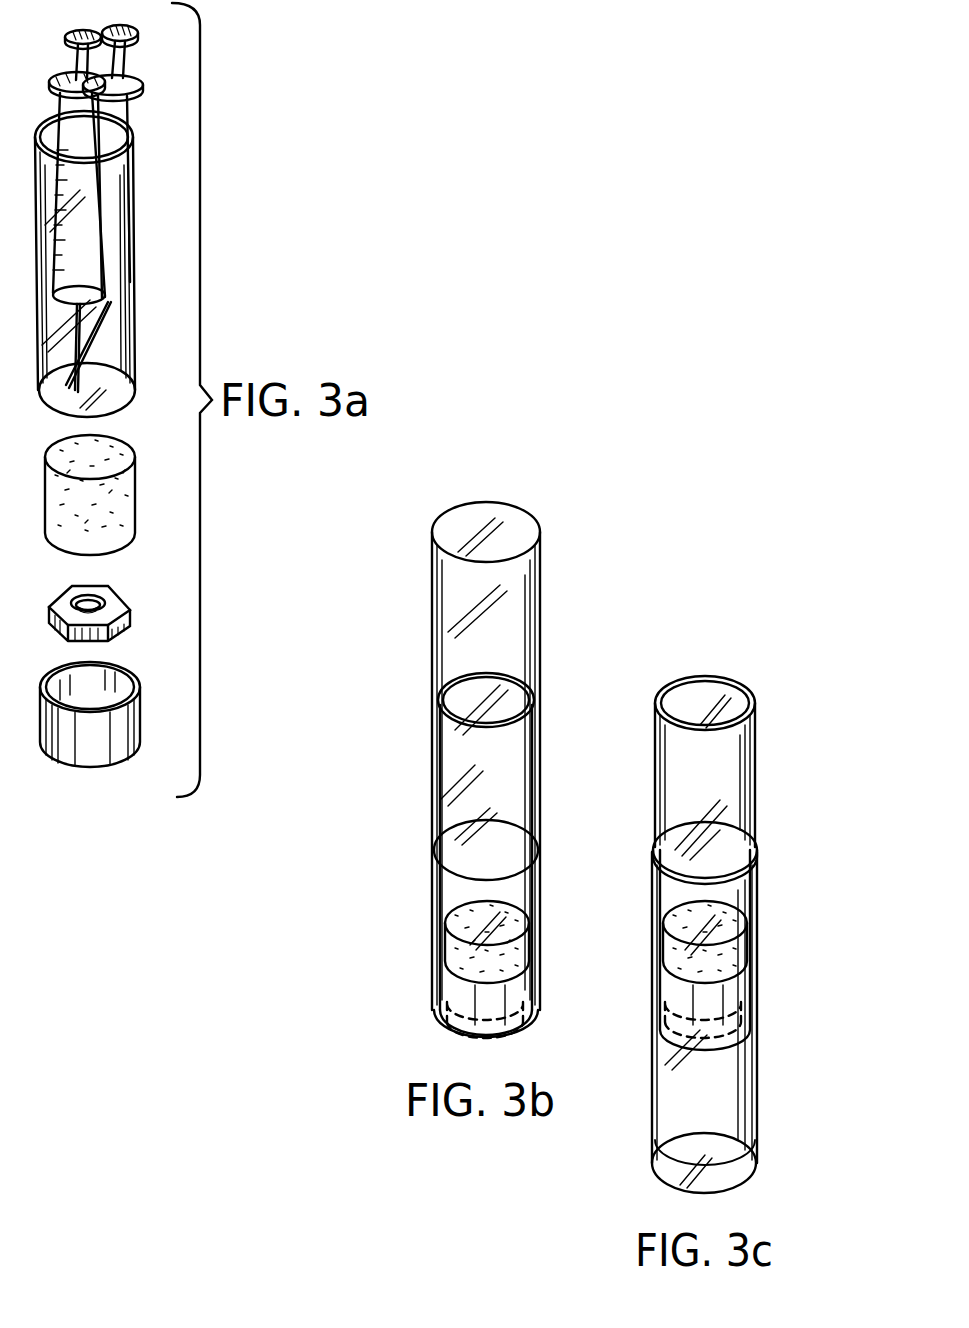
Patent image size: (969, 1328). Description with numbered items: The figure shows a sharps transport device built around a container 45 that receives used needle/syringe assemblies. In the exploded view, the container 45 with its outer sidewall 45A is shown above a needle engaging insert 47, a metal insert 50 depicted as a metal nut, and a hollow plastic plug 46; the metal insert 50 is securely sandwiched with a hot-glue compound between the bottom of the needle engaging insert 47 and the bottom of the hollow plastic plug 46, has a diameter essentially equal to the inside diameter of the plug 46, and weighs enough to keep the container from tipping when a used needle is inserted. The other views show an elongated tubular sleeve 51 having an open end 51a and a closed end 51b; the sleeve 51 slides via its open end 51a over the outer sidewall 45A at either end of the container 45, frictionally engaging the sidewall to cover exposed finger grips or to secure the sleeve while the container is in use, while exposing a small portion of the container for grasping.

In FIG. 3a, the container 45 is at (106, 125).
In FIG. 3b, the container 45 is at (440, 888).
In FIG. 3c, the container 45 is at (755, 768).
In FIG. 3a, the outer sidewall 45A is at (134, 302).
In FIG. 3a, the hollow plastic plug 46 is at (64, 765).
In FIG. 3b, the hollow plastic plug 46 is at (475, 1028).
In FIG. 3a, the needle engaging insert 47 is at (136, 500).
In FIG. 3b, the needle engaging insert 47 is at (445, 958).
In FIG. 3a, the metal insert 50 is at (131, 615).
In FIG. 3c, the elongated tubular sleeve 51 is at (751, 1078).
In FIG. 3c, the open end 51a is at (705, 860).
In FIG. 3b, the closed end 51b is at (517, 522).
In FIG. 3c, the closed end 51b is at (720, 1172).